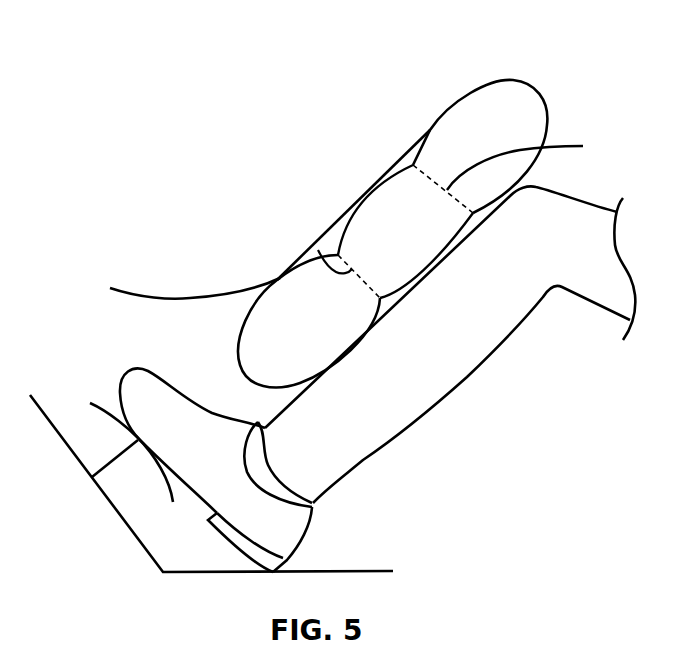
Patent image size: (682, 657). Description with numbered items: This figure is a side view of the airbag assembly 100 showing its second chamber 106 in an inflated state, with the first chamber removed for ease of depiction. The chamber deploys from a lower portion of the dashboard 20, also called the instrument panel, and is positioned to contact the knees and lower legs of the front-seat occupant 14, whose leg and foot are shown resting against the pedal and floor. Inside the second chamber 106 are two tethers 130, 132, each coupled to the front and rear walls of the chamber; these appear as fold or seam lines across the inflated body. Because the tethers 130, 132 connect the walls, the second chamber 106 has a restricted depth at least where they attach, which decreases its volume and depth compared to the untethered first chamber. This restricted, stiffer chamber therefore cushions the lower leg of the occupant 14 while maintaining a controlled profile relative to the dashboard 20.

The airbag assembly 100 is at (563, 66).
The second chamber 106 is at (415, 243).
The tether 130 is at (539, 163).
The tether 132 is at (318, 250).
The dashboard 20 is at (198, 250).
The front-seat occupant 14 is at (512, 385).